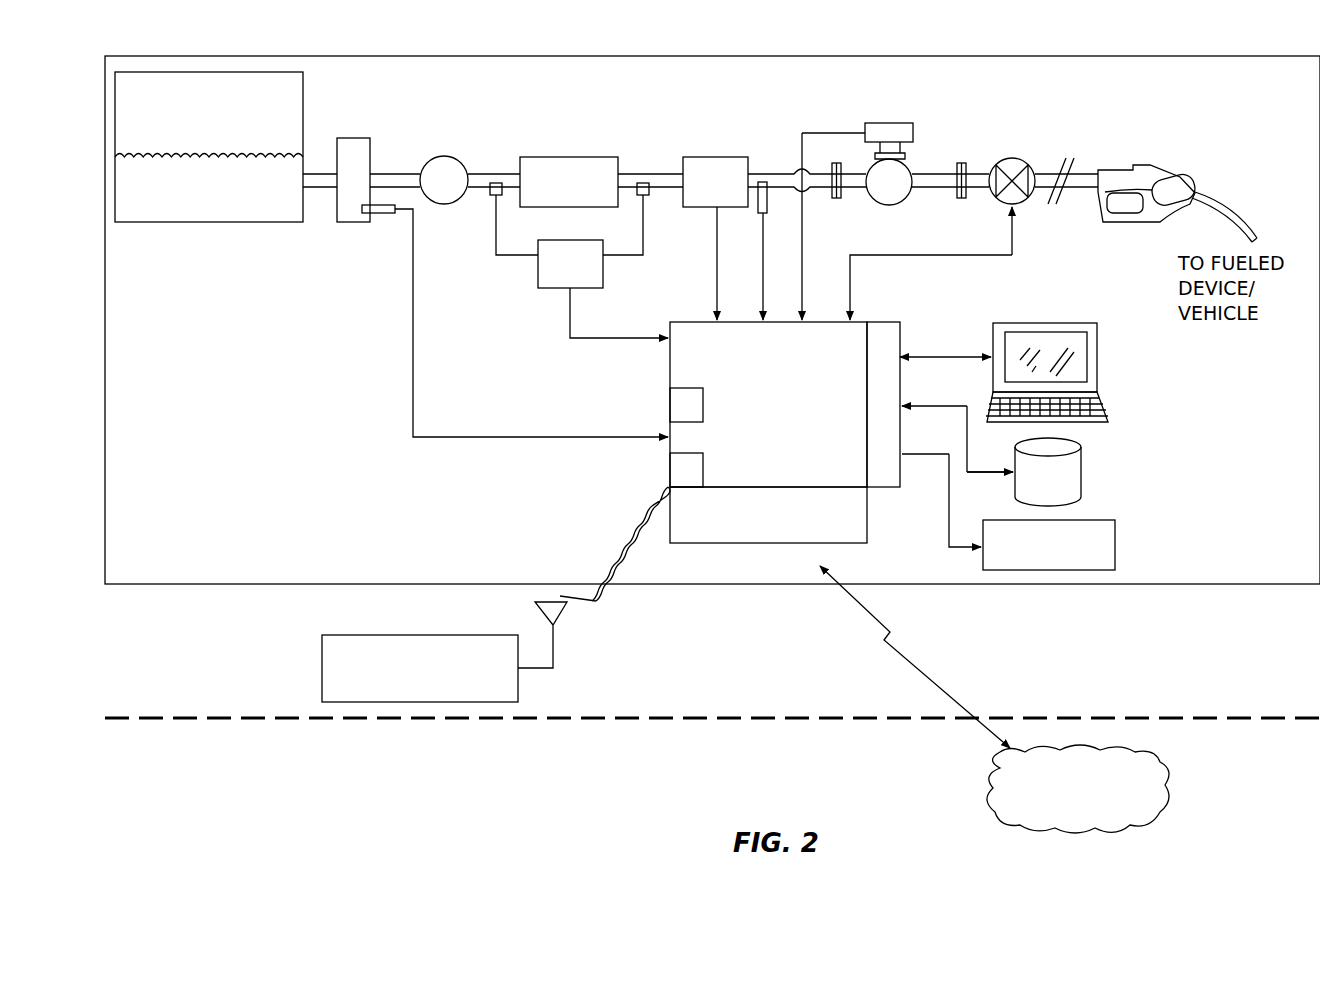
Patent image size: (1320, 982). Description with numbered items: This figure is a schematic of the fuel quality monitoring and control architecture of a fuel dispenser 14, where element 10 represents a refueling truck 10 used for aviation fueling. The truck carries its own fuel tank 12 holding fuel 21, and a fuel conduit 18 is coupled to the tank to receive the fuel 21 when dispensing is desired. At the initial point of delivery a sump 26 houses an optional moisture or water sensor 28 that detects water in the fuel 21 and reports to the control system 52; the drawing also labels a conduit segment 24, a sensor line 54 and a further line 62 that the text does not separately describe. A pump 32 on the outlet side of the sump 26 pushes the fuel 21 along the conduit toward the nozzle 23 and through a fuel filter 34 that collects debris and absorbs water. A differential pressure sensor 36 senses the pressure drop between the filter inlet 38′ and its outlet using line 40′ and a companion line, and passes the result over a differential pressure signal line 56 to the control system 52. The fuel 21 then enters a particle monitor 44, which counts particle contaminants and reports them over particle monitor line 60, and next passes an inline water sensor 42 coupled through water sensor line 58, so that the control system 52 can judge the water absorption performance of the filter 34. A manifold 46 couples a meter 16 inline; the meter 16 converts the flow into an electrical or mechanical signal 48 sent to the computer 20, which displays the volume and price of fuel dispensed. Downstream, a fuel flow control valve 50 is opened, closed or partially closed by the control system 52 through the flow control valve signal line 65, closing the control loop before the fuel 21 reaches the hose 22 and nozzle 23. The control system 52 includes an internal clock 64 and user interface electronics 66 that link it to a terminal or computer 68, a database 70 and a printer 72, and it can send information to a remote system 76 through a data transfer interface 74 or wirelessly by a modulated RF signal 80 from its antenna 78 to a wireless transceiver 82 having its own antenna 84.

The refueling truck 10 is at (1040, 56).
The fuel tank 12 is at (196, 107).
The fuel dispenser 14 is at (392, 342).
The meter 16 is at (900, 203).
The fuel conduit 18 is at (318, 174).
The computer 20 is at (893, 123).
The fuel 21 is at (196, 197).
The hose 22 is at (1075, 190).
The nozzle 23 is at (1120, 170).
The pipe section 24 is at (665, 174).
The sump 26 is at (355, 138).
The moisture or water sensor 28 is at (385, 213).
The pump 32 is at (447, 204).
The fuel filter 34 is at (565, 157).
The differential pressure sensor 36 is at (575, 240).
The inlet 38′ is at (500, 183).
The line 40′ is at (520, 257).
The water sensor 42 is at (767, 205).
The particle monitor 44 is at (715, 157).
The manifold 46 is at (838, 198).
The signal 48 is at (905, 154).
The fuel flow control valve 50 is at (1030, 165).
The control system 52 is at (755, 444).
The level sensor signal line 54 is at (413, 367).
The differential pressure signal line 56 is at (572, 330).
The water sensor line 58 is at (763, 295).
The particle monitor line 60 is at (717, 232).
The valve actuator control line 62 is at (802, 262).
The internal clock 64 is at (670, 392).
The flow control valve signal line 65 is at (950, 255).
The user interface electronics 66 is at (905, 325).
The terminal or computer 68 is at (1097, 355).
The database 70 is at (1082, 470).
The printer 72 is at (1100, 520).
The data transfer interface 74 is at (867, 525).
The remote system 76 is at (1152, 770).
The antenna 78 is at (670, 470).
The modulated RF signal 80 is at (605, 553).
The wireless transceiver 82 is at (372, 635).
The antenna 84 is at (565, 612).